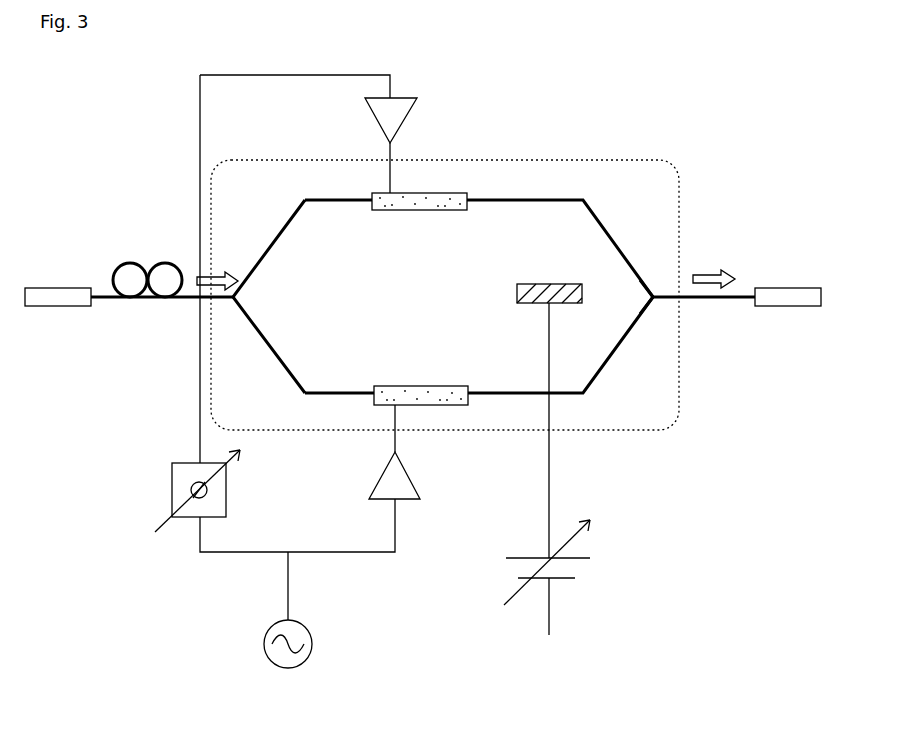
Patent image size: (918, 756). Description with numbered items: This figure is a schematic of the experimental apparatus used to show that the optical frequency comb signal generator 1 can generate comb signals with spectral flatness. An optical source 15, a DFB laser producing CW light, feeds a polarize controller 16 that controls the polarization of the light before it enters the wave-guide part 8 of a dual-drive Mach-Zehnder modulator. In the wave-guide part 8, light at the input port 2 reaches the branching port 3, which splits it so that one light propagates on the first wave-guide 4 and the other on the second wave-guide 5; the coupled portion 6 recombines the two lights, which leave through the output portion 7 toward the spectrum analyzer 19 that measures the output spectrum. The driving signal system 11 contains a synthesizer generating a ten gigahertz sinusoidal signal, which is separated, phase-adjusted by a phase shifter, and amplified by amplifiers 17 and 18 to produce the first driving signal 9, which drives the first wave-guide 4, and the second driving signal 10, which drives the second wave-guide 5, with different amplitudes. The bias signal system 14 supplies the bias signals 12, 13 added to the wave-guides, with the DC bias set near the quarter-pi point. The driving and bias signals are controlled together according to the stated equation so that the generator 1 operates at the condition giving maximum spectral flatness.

The optical frequency comb signal generator 1 is at (506, 128).
The input port 2 is at (188, 304).
The branching port 3 is at (233, 304).
The first wave-guide 4 is at (339, 198).
The second wave-guide 5 is at (337, 403).
The coupled portion 6 is at (654, 304).
The output portion 7 is at (720, 304).
The wave-guide part 8 is at (641, 160).
The first driving signal 9 is at (409, 53).
The second driving signal 10 is at (435, 430).
The driving signal system 11 is at (312, 631).
The bias signal 12 is at (535, 205).
The bias signal 13 is at (519, 392).
The bias signal system 14 is at (581, 506).
The optical source 15 is at (52, 308).
The polarize controller 16 is at (149, 262).
The amplifier 17 is at (410, 118).
The amplifier 18 is at (412, 487).
The spectrum analyzer 19 is at (791, 308).